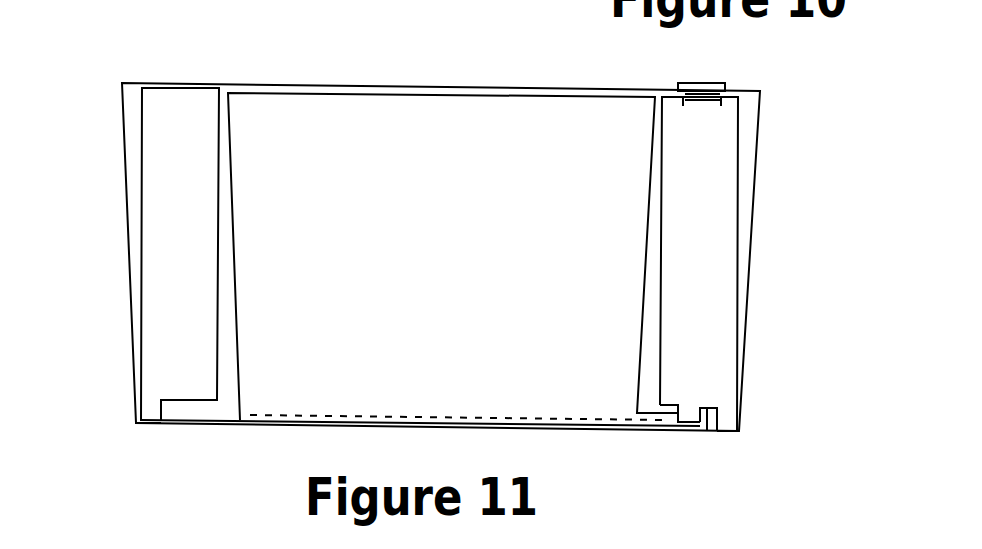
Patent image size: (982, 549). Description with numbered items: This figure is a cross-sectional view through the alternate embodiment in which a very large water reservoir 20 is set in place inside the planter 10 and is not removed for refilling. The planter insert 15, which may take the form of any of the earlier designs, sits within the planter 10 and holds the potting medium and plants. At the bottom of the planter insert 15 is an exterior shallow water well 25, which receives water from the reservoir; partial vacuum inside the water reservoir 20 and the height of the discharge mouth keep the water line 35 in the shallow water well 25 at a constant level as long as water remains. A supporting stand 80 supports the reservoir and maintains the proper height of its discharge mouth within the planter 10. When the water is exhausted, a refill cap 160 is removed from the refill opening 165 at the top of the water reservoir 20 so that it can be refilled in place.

The planter 10 is at (122, 83).
The planter insert 15 is at (228, 123).
The water reservoir 20 is at (138, 162).
The shallow water well 25 is at (707, 430).
The water line 35 is at (460, 417).
The supporting stand 80 is at (165, 412).
The refill cap 160 is at (727, 84).
The refill opening 165 is at (705, 110).